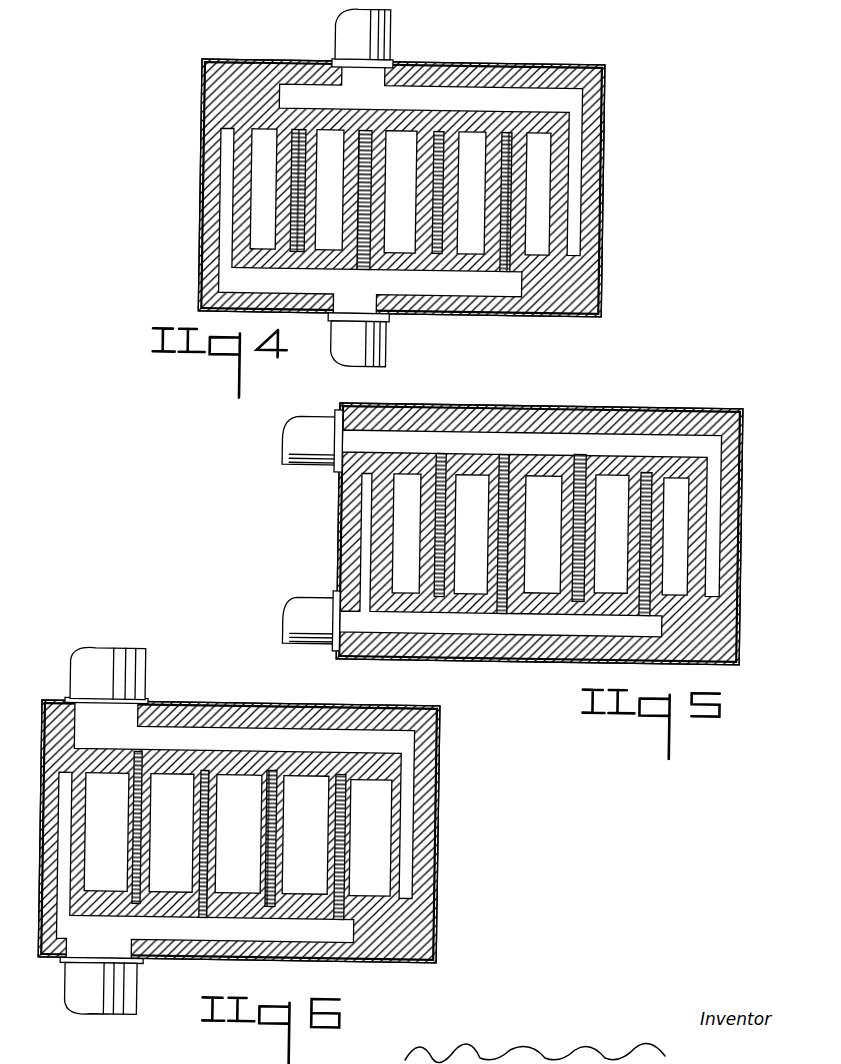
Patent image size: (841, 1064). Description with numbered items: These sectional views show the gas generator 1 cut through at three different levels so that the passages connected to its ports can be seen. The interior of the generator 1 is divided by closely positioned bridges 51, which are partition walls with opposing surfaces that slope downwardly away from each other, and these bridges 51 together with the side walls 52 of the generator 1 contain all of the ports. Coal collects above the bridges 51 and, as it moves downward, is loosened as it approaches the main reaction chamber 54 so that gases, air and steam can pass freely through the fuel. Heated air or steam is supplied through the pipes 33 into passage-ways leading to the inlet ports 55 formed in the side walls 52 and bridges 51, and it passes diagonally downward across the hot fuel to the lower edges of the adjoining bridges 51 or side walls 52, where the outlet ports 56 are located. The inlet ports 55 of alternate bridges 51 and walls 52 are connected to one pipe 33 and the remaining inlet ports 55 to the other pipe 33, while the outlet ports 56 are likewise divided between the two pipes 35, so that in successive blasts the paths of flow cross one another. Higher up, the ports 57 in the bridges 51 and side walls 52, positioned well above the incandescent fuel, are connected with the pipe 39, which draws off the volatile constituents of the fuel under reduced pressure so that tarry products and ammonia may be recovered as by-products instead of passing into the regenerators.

In FIG. 4, the generator 1 is at (605, 207).
In FIG. 5, the generator 1 is at (733, 419).
In FIG. 6, the generator 1 is at (441, 853).
In FIG. 4, the pipe 39 is at (367, 40).
In FIG. 5, the pipe 33 is at (319, 444).
In FIG. 6, the pipe 35 is at (102, 680).
In FIG. 4, the bridge 51 is at (292, 212).
In FIG. 5, the bridge 51 is at (499, 533).
In FIG. 6, the bridge 51 is at (152, 801).
In FIG. 4, the side wall 52 is at (243, 154).
In FIG. 5, the side wall 52 is at (381, 497).
In FIG. 6, the side wall 52 is at (81, 806).
In FIG. 6, the main reaction chamber 54 is at (370, 830).
In FIG. 5, the inlet port 55 is at (435, 523).
In FIG. 6, the outlet port 56 is at (340, 868).
In FIG. 4, the port 57 is at (296, 178).